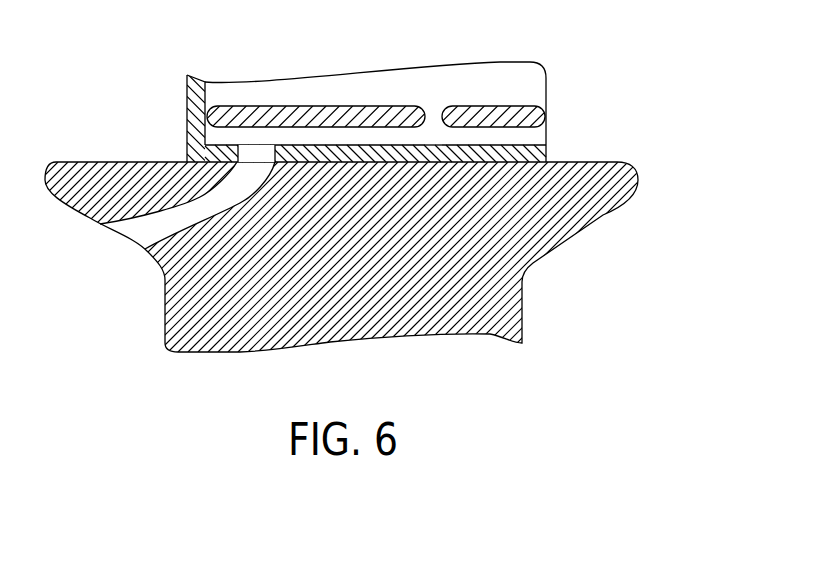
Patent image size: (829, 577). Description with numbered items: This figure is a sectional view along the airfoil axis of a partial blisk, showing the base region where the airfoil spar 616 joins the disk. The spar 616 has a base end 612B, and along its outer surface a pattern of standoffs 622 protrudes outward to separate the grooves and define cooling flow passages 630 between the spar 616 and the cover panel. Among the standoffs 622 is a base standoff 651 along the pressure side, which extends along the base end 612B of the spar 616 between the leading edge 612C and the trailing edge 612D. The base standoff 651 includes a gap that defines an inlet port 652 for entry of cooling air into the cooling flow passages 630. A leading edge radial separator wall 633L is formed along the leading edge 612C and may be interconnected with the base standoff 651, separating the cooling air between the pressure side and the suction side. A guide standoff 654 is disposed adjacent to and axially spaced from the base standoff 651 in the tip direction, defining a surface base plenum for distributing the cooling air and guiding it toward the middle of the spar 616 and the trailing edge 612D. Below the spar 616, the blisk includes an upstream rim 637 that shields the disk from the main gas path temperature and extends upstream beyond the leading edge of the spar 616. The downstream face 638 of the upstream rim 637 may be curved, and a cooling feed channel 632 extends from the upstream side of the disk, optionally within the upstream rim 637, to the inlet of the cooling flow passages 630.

The base end 612B is at (339, 257).
The leading edge 612C is at (185, 134).
The trailing edge 612D is at (558, 105).
The spar 616 is at (492, 97).
The standoffs 622 is at (376, 80).
The cooling flow passages 630 is at (434, 108).
The cooling feed channel 632 is at (143, 236).
The leading edge radial separator wall 633L is at (194, 93).
The upstream rim 637 is at (70, 206).
The downstream face 638 is at (100, 228).
The base standoff 651 is at (401, 100).
The inlet port 652 is at (253, 150).
The guide standoff 654 is at (259, 112).